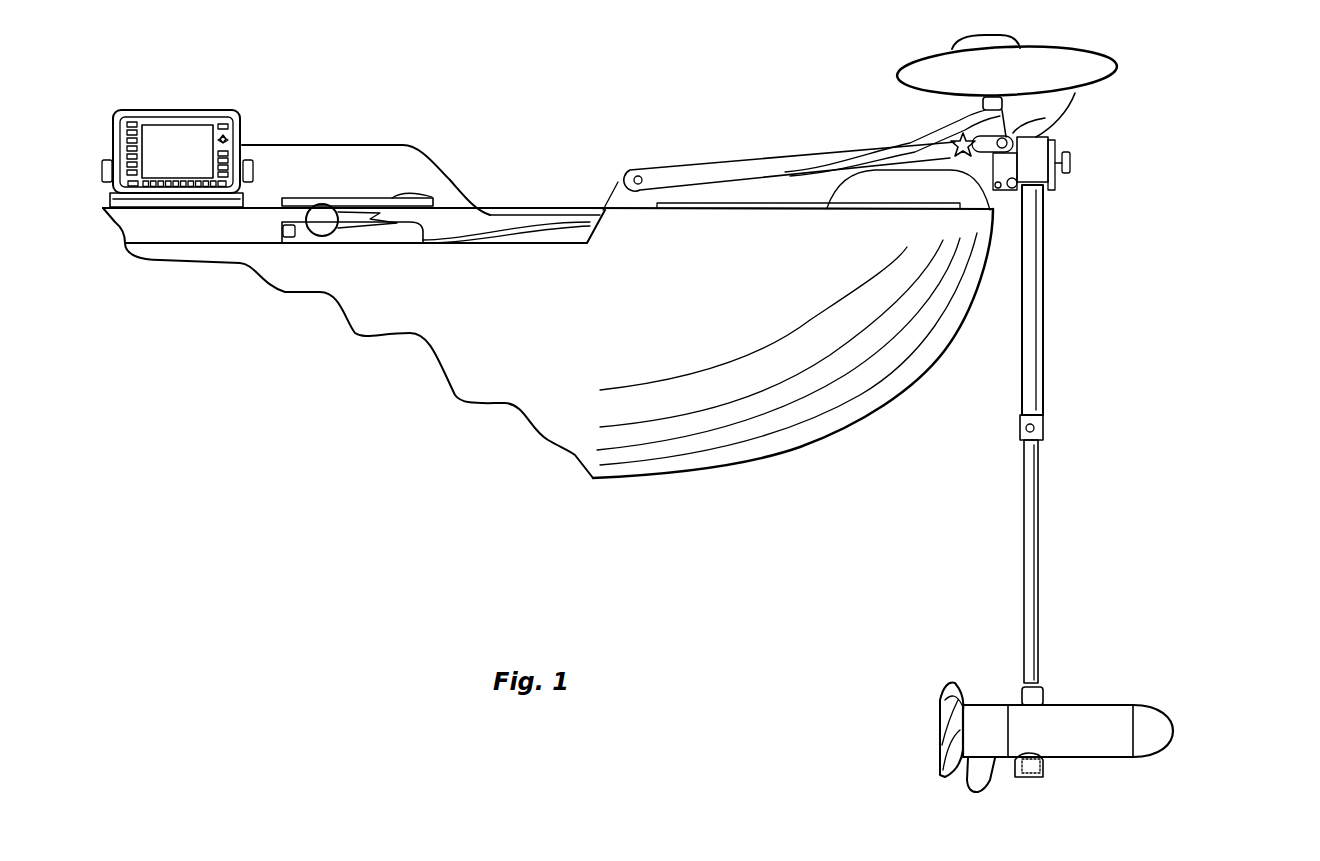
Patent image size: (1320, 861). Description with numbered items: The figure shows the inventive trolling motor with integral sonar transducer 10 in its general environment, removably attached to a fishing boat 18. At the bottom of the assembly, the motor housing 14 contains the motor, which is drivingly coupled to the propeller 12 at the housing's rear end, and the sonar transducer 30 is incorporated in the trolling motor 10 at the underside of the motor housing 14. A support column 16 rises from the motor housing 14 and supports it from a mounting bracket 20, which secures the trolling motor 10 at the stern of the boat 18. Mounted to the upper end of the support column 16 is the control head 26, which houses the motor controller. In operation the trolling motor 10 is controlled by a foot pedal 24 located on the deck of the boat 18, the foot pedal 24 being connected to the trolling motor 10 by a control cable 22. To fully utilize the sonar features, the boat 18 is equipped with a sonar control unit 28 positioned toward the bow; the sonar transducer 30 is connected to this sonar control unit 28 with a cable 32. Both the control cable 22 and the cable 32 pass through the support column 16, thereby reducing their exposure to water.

The trolling motor with integral sonar transducer 10 is at (1176, 70).
The propeller 12 is at (943, 680).
The motor housing 14 is at (1153, 713).
The support column 16 is at (1035, 333).
The fishing boat 18 is at (500, 208).
The mounting bracket 20 is at (843, 196).
The control cable 22 is at (1050, 130).
The foot pedal 24 is at (345, 195).
The control head 26 is at (1057, 92).
The sonar control unit 28 is at (217, 110).
The sonar transducer 30 is at (1045, 770).
The cable 32 is at (370, 143).